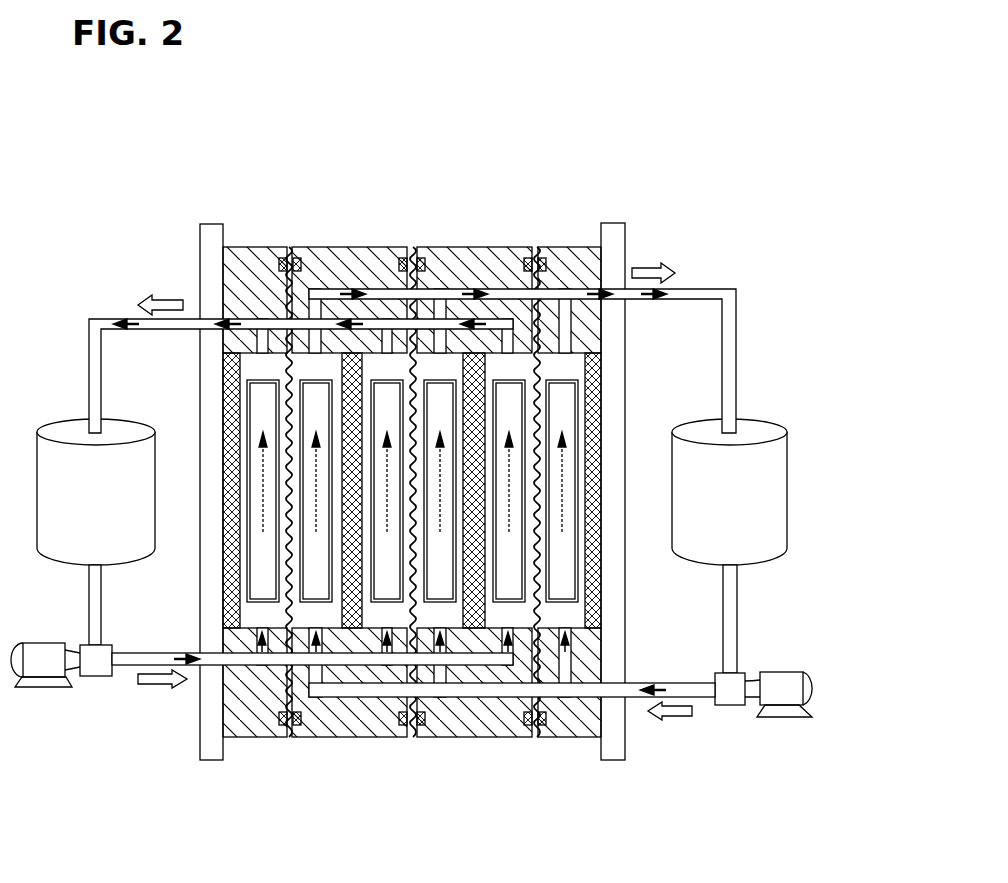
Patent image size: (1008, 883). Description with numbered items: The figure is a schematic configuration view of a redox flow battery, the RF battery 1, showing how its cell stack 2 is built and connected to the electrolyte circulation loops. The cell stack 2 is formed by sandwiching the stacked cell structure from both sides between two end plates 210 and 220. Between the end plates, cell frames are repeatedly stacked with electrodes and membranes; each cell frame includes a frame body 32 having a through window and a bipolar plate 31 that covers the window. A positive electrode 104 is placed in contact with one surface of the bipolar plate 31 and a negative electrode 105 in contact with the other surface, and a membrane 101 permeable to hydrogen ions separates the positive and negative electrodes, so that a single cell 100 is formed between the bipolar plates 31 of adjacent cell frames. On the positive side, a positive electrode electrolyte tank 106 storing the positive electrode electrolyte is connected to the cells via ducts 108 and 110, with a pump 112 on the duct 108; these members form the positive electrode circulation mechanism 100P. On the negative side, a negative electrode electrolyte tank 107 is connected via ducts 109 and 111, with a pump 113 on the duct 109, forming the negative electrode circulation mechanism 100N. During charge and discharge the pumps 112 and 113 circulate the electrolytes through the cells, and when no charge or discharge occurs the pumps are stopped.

The RF battery 1 is at (75, 136).
The cell stack 2 is at (510, 188).
The bipolar plate 31 is at (223, 391).
The frame body 32 is at (242, 249).
The cell 100 is at (252, 630).
The membrane 101 is at (290, 606).
The positive electrode 104 is at (255, 577).
The negative electrode 105 is at (312, 580).
The positive electrode electrolyte tank 106 is at (53, 418).
The negative electrode electrolyte tank 107 is at (776, 420).
The duct 108 is at (127, 668).
The duct 109 is at (698, 697).
The duct 110 is at (103, 318).
The duct 111 is at (719, 289).
The pump 112 is at (32, 648).
The pump 113 is at (786, 672).
The positive electrode circulation mechanism 100P is at (74, 706).
The negative electrode circulation mechanism 100N is at (751, 724).
The end plate 210 is at (620, 750).
The end plate 220 is at (208, 752).